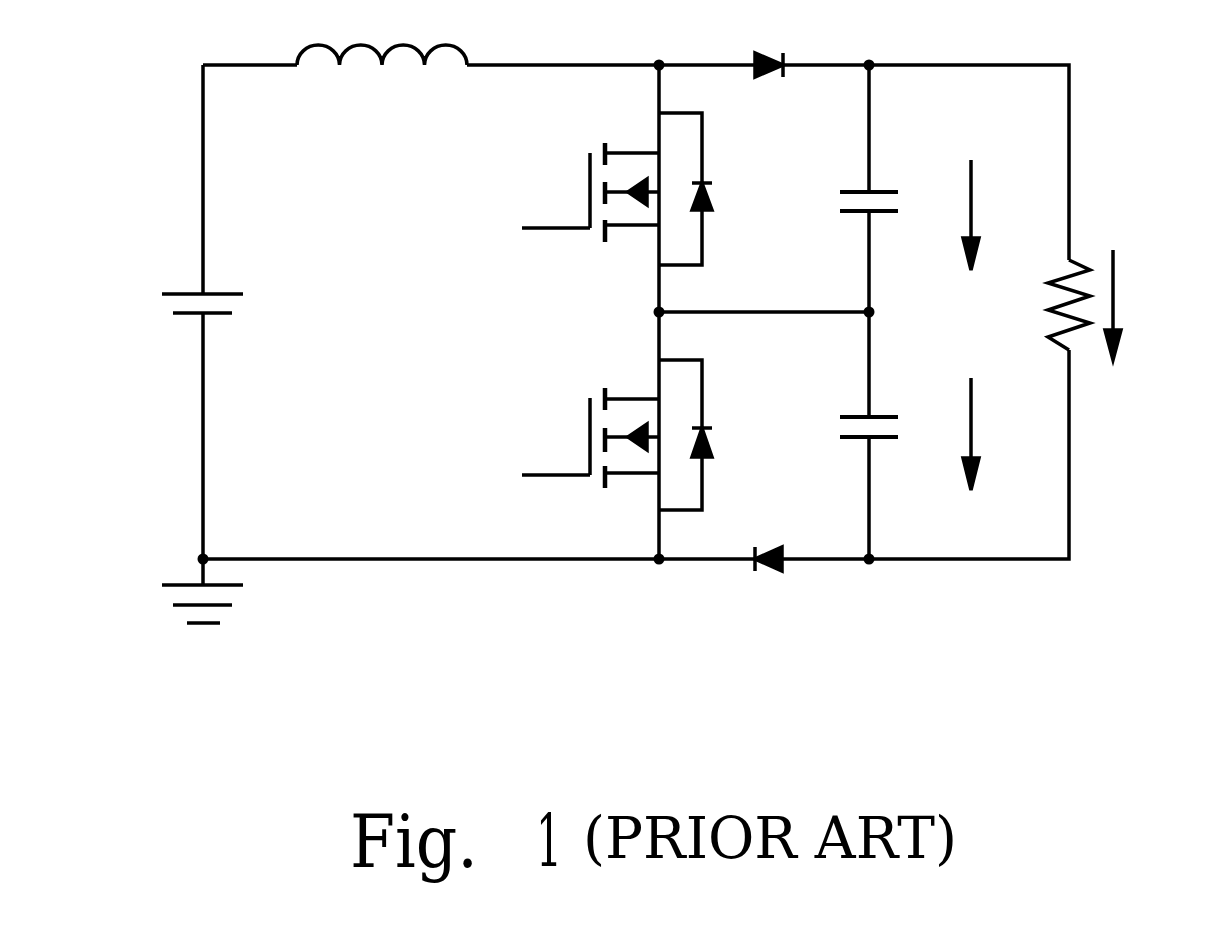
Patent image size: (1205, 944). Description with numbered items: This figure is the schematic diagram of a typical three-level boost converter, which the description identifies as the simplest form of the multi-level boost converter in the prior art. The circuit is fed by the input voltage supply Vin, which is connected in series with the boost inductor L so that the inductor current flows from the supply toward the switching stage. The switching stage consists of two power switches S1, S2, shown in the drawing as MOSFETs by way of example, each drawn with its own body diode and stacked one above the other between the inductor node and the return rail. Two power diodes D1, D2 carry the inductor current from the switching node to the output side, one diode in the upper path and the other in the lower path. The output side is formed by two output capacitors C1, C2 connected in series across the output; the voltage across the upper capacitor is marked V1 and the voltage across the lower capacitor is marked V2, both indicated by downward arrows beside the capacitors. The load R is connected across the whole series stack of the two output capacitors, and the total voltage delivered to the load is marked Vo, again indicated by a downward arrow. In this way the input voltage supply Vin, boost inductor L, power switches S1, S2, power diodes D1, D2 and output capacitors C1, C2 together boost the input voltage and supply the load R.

The boost inductor L is at (382, 96).
The input voltage supply Vin is at (236, 314).
The power switch S1 is at (617, 189).
The power switch S2 is at (617, 435).
The power diode D1 is at (774, 93).
The power diode D2 is at (761, 530).
The output capacitor C1 is at (845, 202).
The output capacitor C2 is at (846, 431).
The load R is at (1051, 305).
The first capacitor voltage V1 is at (944, 215).
The second capacitor voltage V2 is at (944, 434).
The output voltage Vo is at (1136, 305).